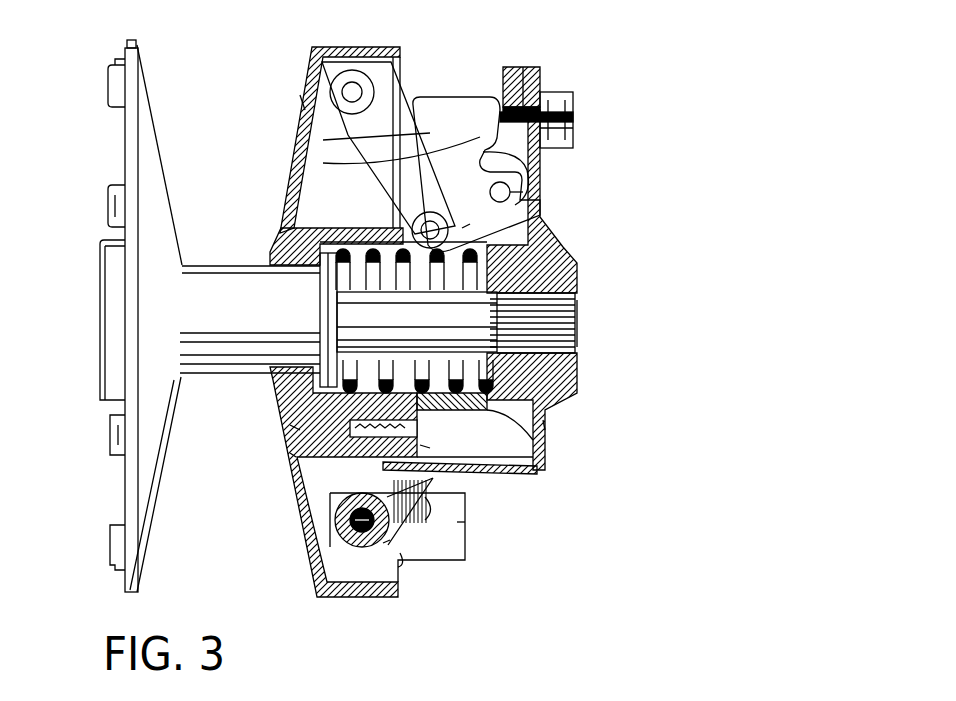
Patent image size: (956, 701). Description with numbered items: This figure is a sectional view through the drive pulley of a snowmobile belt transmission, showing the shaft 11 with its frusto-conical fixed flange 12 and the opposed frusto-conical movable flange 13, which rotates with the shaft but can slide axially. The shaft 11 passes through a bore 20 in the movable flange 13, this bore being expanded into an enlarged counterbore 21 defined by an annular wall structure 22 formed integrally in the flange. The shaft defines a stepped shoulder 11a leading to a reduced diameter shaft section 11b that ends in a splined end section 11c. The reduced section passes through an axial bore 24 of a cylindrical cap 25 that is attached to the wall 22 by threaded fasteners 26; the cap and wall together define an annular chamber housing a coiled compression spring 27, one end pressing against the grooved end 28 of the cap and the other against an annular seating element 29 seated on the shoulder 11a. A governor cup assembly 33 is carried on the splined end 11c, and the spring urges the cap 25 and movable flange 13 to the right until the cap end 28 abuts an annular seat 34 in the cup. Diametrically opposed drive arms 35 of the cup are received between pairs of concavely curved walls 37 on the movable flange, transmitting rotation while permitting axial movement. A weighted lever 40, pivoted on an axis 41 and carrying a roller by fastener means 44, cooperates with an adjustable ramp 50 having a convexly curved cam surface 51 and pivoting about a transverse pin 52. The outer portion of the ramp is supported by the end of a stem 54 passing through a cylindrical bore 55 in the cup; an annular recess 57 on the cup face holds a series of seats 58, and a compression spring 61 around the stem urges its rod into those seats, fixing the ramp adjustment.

The shaft 11 is at (197, 293).
The stepped shoulder 11a is at (310, 307).
The reduced diameter shaft section 11b is at (462, 329).
The splined end section 11c is at (573, 327).
The fixed flange 12 is at (145, 163).
The movable flange 13 is at (297, 127).
The bore 20 is at (270, 377).
The enlarged counterbore 21 is at (323, 203).
The annular wall structure 22 is at (420, 463).
The axial bore 24 is at (580, 313).
The cylindrical cap 25 is at (383, 543).
The threaded fasteners 26 is at (420, 445).
The coiled compression spring 27 is at (290, 453).
The grooved end 28 is at (543, 420).
The annular seating element 29 is at (290, 425).
The governor cup assembly 33 is at (573, 250).
The annular seat 34 is at (545, 253).
The drive arms 35 is at (407, 557).
The concavely curved walls 37 is at (457, 522).
The weighted levers 40 is at (397, 45).
The pivot axis 41 is at (312, 45).
The fastener means 44 is at (300, 95).
The adjustable ramp 50 is at (435, 97).
The convexly curved cam surface 51 is at (323, 140).
The transverse pin 52 is at (505, 193).
The stem 54 is at (542, 85).
The cylindrical bore 55 is at (573, 137).
The annular recess 57 is at (323, 163).
The seats 58 is at (523, 67).
The compression spring 61 is at (573, 93).